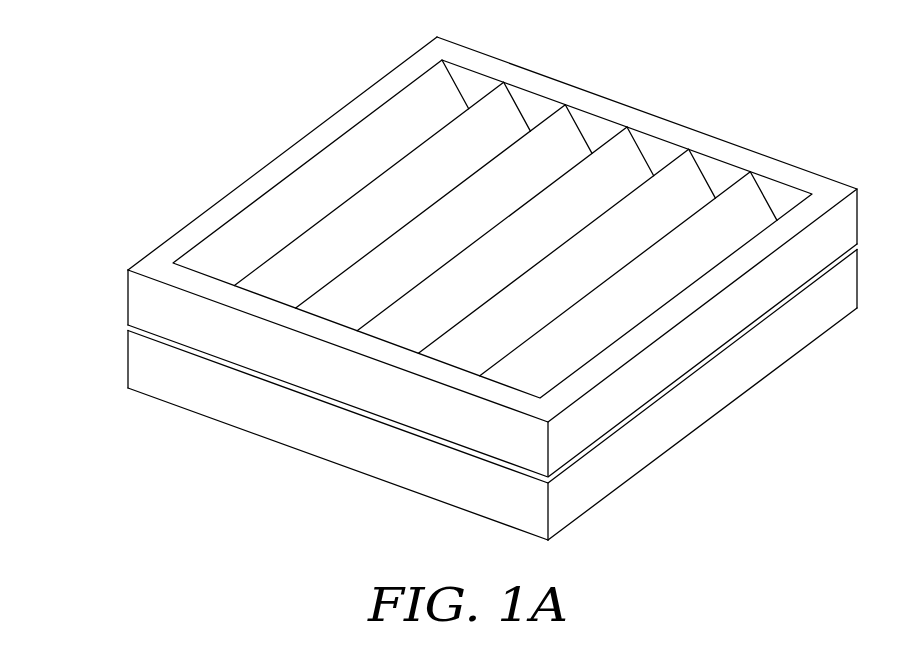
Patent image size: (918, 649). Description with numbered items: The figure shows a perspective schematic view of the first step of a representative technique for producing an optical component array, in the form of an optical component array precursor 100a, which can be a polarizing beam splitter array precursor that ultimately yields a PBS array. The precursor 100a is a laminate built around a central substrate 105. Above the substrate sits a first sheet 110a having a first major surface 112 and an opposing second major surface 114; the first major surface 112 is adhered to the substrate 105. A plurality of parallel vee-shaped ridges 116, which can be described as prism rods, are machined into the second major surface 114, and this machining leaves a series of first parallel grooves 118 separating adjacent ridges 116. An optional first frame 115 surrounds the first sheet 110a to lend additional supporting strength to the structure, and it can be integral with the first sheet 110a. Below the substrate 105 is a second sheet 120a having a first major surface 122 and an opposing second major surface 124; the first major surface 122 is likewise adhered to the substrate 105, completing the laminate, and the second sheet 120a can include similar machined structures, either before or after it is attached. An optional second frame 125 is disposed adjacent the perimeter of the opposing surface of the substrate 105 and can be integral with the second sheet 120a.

The optical component array precursor 100a is at (226, 64).
The first sheet 110a is at (123, 261).
The first major surface 112 is at (138, 320).
The second major surface 114 is at (243, 193).
The first frame 115 is at (358, 96).
The parallel vee-shaped ridges 116 is at (502, 112).
The first parallel grooves 118 is at (593, 128).
The substrate 105 is at (147, 338).
The second sheet 120a is at (120, 390).
The first major surface 122 is at (143, 340).
The second major surface 124 is at (163, 400).
The second frame 125 is at (259, 452).